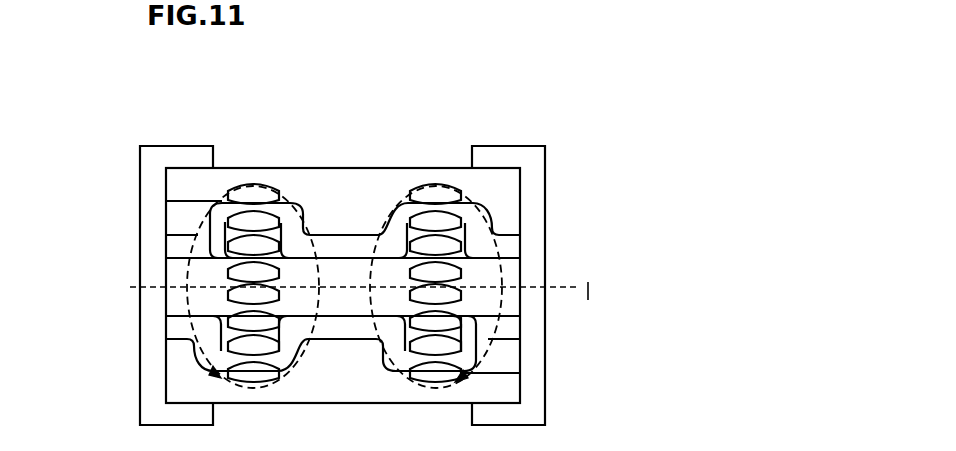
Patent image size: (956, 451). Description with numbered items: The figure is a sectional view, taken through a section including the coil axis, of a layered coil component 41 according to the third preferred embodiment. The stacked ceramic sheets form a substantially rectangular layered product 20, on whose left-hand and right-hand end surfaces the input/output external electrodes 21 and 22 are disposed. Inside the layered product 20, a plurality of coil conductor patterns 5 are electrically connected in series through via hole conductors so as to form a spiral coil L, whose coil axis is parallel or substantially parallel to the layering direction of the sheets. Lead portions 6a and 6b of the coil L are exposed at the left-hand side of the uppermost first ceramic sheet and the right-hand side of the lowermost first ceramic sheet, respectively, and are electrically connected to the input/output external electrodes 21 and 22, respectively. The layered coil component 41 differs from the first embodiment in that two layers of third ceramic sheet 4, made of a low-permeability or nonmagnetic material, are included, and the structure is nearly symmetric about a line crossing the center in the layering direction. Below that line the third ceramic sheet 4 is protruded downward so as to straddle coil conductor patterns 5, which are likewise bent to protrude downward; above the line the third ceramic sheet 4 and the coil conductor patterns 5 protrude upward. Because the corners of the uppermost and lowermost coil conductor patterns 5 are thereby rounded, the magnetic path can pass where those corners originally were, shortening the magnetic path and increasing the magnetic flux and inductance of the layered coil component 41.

The layered coil component 41 is at (180, 107).
The input/output external electrode 21 is at (162, 158).
The input/output external electrode 22 is at (533, 163).
The layered product 20 is at (500, 217).
The third ceramic sheet 4 is at (333, 247).
The coil conductor pattern 5 is at (262, 266).
The lead portion 6a is at (186, 202).
The lead portion 6b is at (512, 373).
The coil L is at (466, 273).